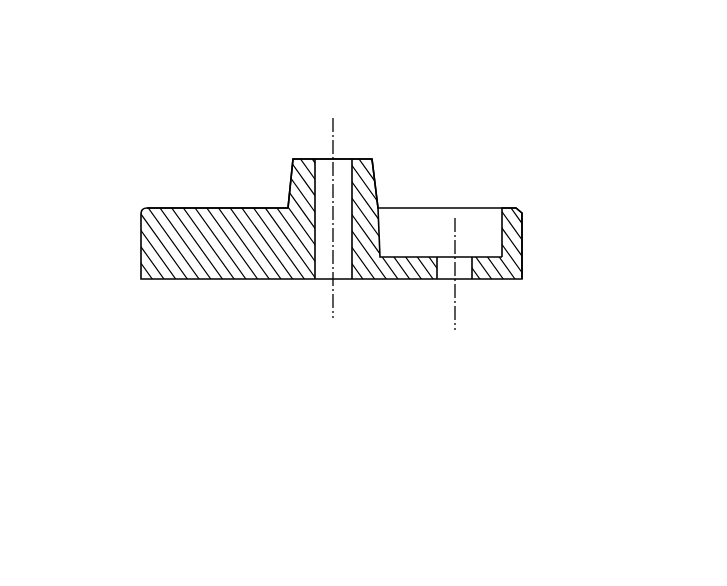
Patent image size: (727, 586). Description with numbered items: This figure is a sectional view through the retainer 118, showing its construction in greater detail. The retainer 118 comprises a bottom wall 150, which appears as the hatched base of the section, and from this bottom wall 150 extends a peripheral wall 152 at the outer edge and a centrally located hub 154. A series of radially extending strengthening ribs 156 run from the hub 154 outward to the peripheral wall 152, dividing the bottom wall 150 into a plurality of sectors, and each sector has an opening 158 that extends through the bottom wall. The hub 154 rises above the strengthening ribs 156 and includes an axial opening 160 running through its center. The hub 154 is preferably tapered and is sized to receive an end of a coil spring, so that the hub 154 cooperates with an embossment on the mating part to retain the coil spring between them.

The retainer 118 is at (250, 126).
The bottom wall 150 is at (407, 280).
The peripheral wall 152 is at (522, 208).
The hub 154 is at (375, 178).
The strengthening ribs 156 is at (242, 207).
The opening 158 is at (463, 257).
The axial opening 160 is at (342, 158).